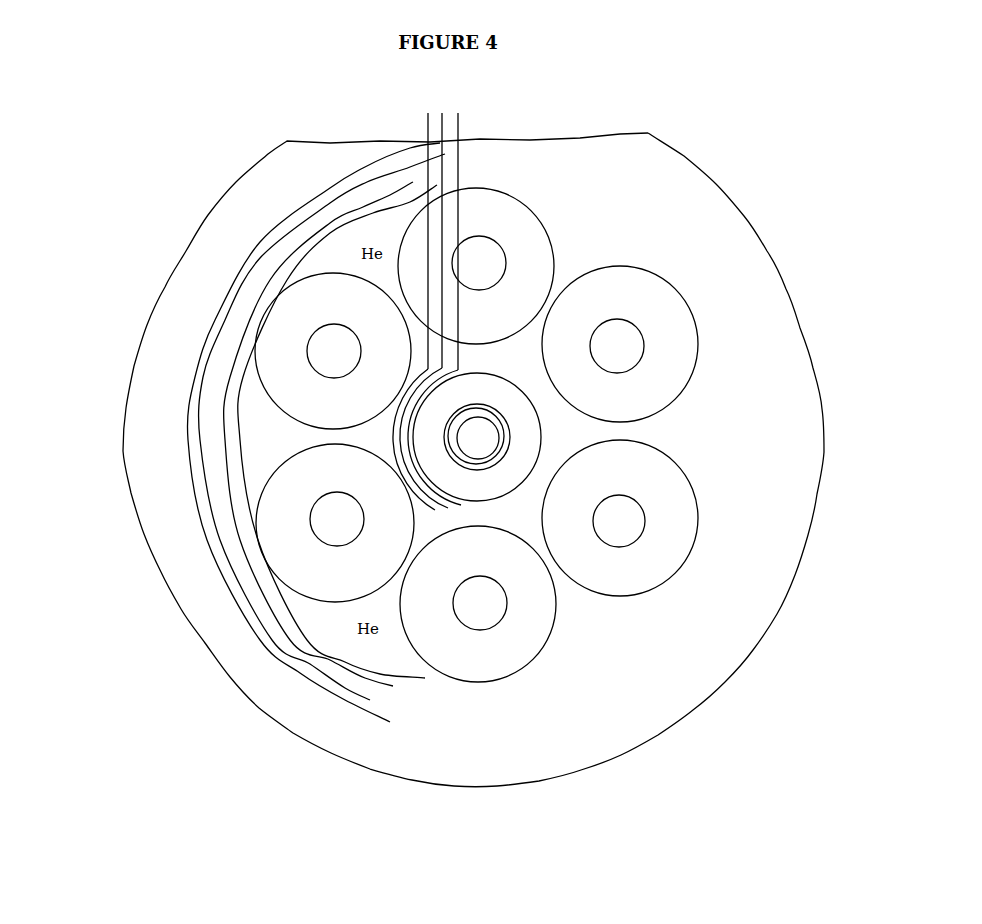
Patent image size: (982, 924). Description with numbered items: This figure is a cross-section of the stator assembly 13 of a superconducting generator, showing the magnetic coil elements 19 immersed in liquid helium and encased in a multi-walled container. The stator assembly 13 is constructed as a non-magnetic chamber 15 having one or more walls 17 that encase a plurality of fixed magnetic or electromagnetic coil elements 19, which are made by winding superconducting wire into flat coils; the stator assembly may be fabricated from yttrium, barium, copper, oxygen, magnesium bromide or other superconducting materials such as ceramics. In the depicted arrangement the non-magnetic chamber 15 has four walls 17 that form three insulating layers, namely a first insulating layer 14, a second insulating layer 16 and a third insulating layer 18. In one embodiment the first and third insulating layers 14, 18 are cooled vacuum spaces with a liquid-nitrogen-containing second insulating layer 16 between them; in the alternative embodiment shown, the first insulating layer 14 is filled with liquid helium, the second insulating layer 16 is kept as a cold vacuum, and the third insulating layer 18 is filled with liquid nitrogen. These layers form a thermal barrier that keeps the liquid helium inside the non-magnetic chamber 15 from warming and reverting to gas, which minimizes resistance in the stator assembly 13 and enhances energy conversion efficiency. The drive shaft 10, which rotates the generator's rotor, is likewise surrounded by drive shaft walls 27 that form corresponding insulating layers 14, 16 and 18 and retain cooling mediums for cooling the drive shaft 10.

The drive shaft 10 is at (541, 430).
The stator assembly 13 is at (140, 346).
The first insulating layer 14 is at (461, 505).
The non-magnetic chamber 15 is at (263, 438).
The second insulating layer 16 is at (448, 508).
The walls 17 is at (189, 473).
The third insulating layer 18 is at (435, 510).
The magnetic coil elements 19 is at (541, 222).
The drive shaft walls 27 is at (448, 231).